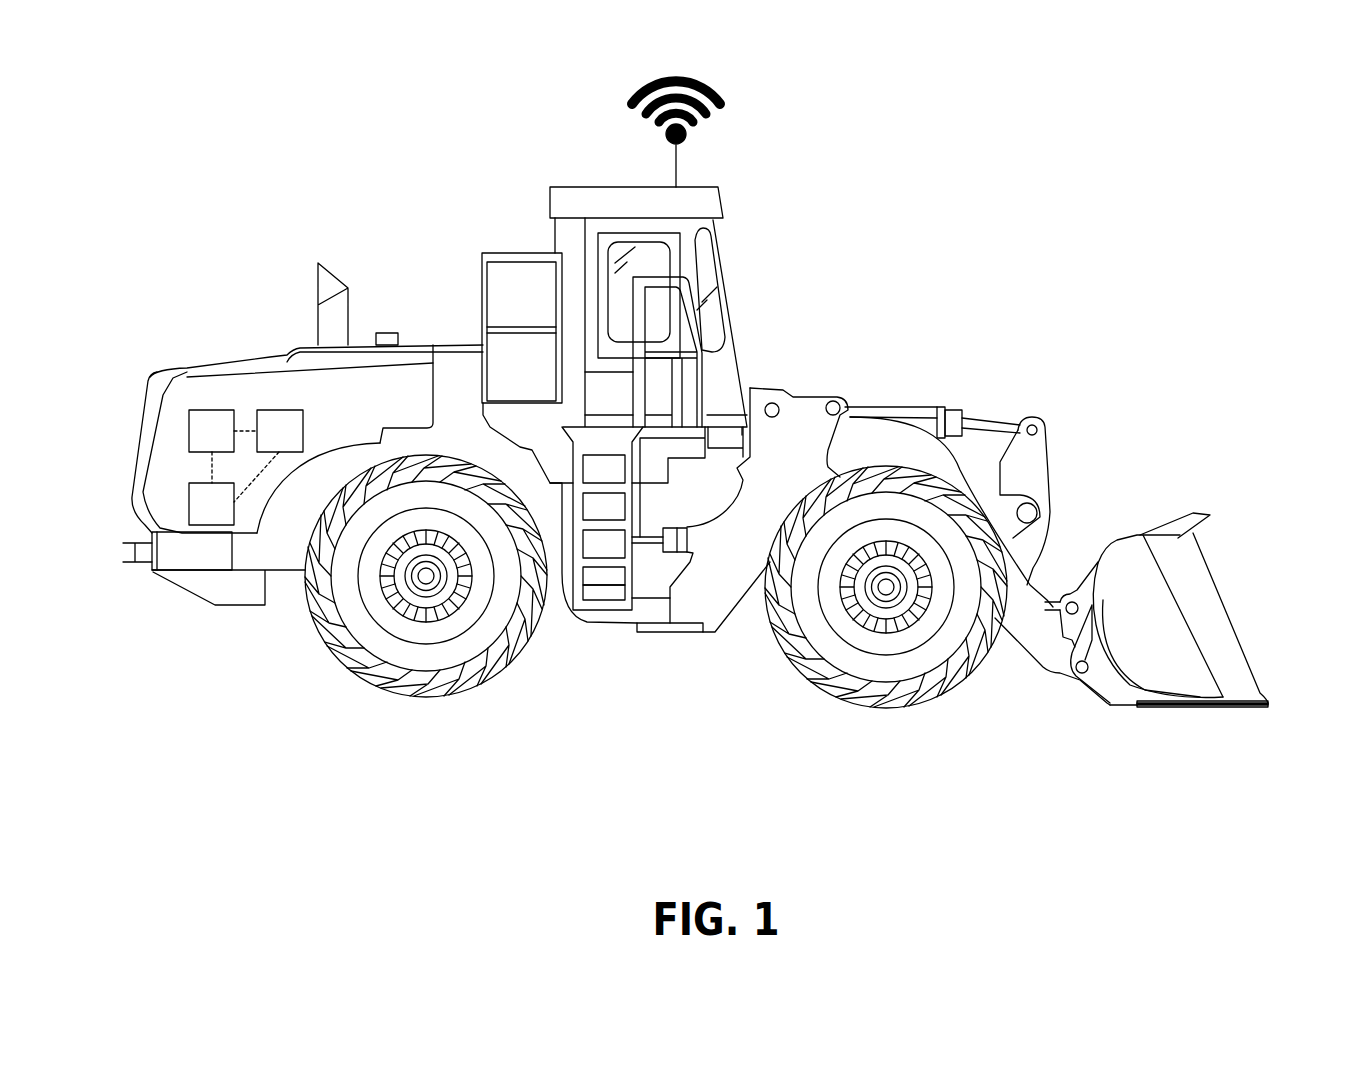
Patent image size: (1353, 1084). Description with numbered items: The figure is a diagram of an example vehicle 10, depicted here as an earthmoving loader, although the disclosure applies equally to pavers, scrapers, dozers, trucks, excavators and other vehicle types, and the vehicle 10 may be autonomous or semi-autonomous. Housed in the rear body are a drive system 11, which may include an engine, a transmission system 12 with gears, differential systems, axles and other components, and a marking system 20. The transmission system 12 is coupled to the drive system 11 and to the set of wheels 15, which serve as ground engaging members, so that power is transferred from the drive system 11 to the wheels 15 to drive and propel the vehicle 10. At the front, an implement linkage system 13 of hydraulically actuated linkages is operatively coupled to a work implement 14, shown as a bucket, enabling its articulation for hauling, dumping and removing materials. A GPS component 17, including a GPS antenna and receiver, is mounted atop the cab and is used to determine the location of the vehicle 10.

The vehicle 10 is at (446, 409).
The drive system 11 is at (211, 431).
The transmission system 12 is at (280, 431).
The marking system 20 is at (211, 504).
The implement linkage system 13 is at (1048, 412).
The work implement 14 is at (1230, 541).
The wheels 15 is at (457, 695).
The global positioning system (GPS) component 17 is at (685, 137).